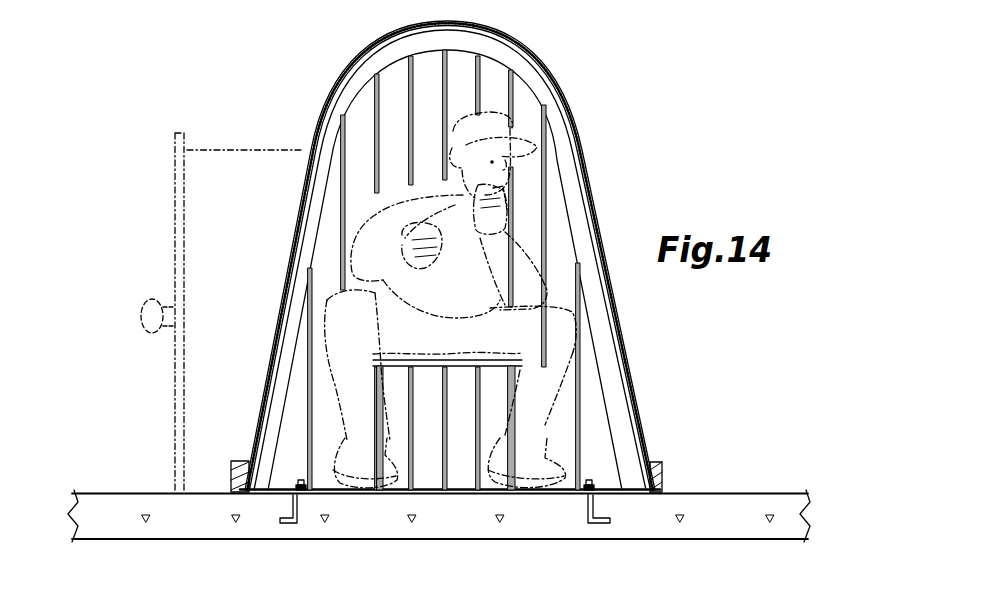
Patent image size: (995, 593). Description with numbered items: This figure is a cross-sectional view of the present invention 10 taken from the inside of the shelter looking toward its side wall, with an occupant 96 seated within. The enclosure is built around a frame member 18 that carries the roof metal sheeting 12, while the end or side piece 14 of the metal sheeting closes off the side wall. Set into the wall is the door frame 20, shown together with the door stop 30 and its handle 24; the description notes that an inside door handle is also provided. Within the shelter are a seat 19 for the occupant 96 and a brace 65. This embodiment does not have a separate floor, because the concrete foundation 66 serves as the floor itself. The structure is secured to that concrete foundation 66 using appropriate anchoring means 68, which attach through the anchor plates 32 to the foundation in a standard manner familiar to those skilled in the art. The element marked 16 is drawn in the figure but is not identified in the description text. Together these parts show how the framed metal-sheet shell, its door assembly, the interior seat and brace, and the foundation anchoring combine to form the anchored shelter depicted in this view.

The present invention 10 is at (316, 60).
The roof metal sheeting 12 is at (555, 72).
The end or side piece of the metal sheeting 14 is at (367, 142).
The base flange bracket 16 is at (663, 468).
The frame member 18 is at (495, 44).
The seat 19 is at (467, 372).
The door frame 20 is at (247, 150).
The handle 24 is at (140, 315).
The door stop 30 is at (170, 143).
The anchor plates 32 is at (602, 484).
The brace 65 is at (388, 402).
The concrete foundation 66 is at (762, 500).
The anchoring means 68 is at (583, 510).
The occupant 96 is at (513, 214).